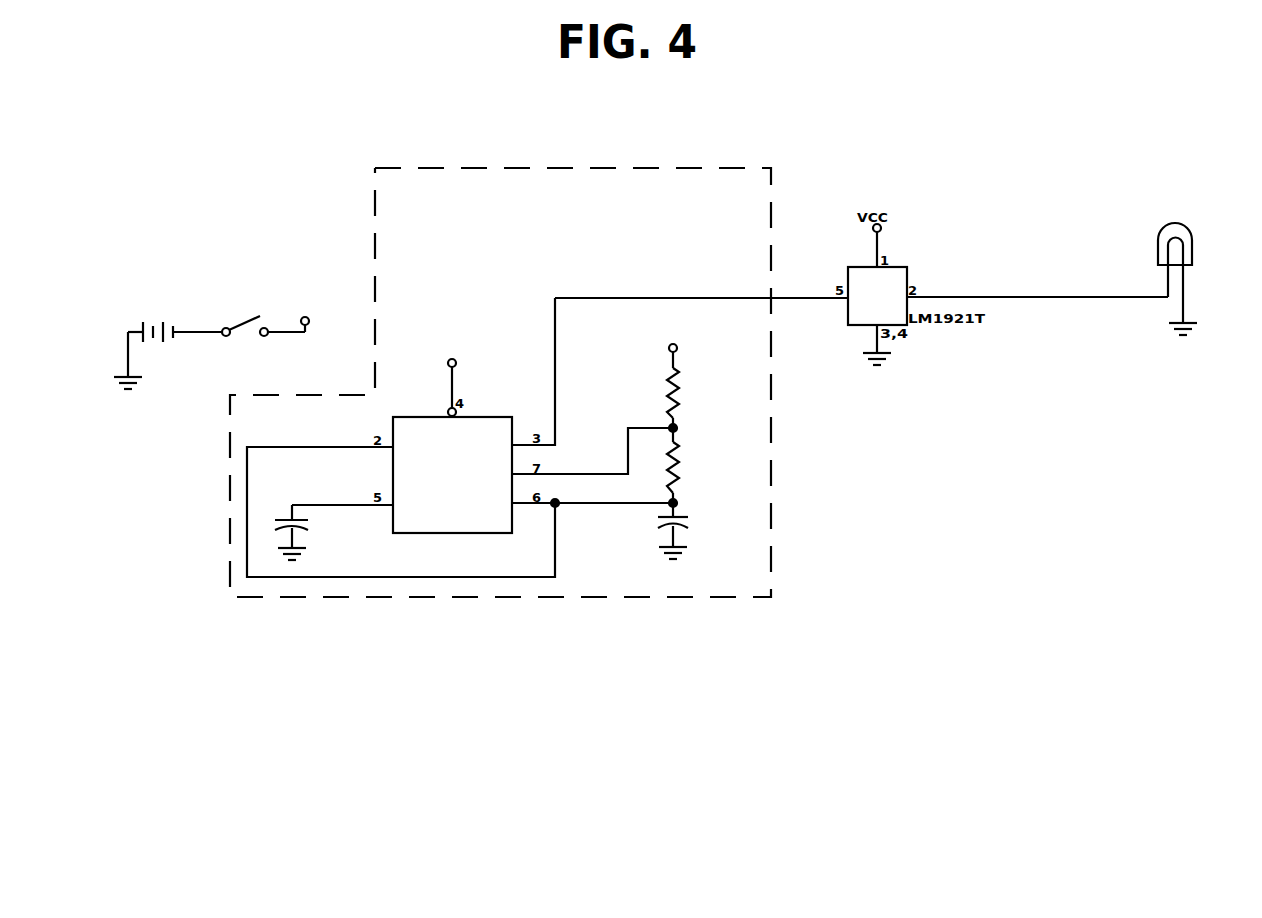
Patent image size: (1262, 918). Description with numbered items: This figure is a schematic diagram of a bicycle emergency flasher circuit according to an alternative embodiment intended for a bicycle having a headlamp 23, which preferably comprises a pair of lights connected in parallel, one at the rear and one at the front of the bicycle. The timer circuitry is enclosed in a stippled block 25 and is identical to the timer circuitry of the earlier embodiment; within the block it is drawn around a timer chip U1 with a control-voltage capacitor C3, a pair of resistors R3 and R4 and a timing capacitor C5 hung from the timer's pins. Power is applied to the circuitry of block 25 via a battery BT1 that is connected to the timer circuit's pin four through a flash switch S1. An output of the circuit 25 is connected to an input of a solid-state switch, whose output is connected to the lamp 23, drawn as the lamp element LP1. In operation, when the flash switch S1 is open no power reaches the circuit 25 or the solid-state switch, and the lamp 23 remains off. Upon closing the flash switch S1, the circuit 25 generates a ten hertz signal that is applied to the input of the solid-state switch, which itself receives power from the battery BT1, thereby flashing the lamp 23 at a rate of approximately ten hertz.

The stippled block 25 is at (627, 167).
The headlamp 23 is at (1210, 264).
The battery BT1 is at (168, 346).
The flash switch S1 is at (268, 331).
The LM555 timer U1 is at (452, 455).
The capacitor C3 is at (311, 532).
The resistor R3 is at (690, 378).
The resistor R4 is at (703, 465).
The capacitor C5 is at (698, 531).
The lamp LP1 is at (1215, 245).